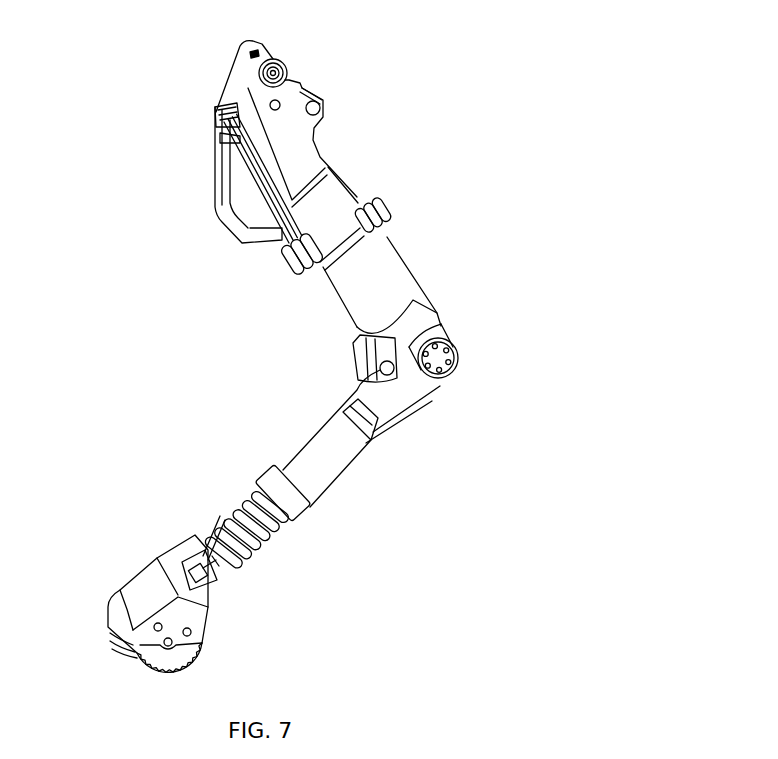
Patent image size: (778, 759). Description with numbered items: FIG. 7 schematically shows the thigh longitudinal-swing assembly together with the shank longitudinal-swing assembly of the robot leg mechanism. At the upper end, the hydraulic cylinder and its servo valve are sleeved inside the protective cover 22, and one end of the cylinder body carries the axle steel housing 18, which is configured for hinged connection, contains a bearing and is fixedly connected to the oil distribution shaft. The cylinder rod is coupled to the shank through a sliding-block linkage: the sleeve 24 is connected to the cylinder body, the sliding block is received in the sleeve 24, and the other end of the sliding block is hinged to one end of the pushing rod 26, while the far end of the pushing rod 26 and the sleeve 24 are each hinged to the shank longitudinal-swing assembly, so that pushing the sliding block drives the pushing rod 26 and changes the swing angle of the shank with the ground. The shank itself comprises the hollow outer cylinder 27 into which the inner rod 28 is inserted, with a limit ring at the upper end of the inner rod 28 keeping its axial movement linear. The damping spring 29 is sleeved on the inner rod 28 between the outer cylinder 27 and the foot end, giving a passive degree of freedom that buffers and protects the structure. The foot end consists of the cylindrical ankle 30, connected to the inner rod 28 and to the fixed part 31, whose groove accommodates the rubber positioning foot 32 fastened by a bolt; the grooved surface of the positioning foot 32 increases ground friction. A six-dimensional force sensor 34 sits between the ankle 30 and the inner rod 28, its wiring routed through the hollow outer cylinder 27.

The axle steel housing 18 is at (290, 66).
The protective cover 22 is at (222, 163).
The sleeve 24 is at (397, 272).
The pushing rod 26 is at (372, 342).
The outer cylinder 27 is at (340, 452).
The inner rod 28 is at (240, 553).
The damping spring 29 is at (220, 522).
The ankle 30 is at (205, 583).
The fixed part 31 is at (147, 590).
The positioning foot 32 is at (147, 647).
The six-dimensional force sensor 34 is at (200, 558).